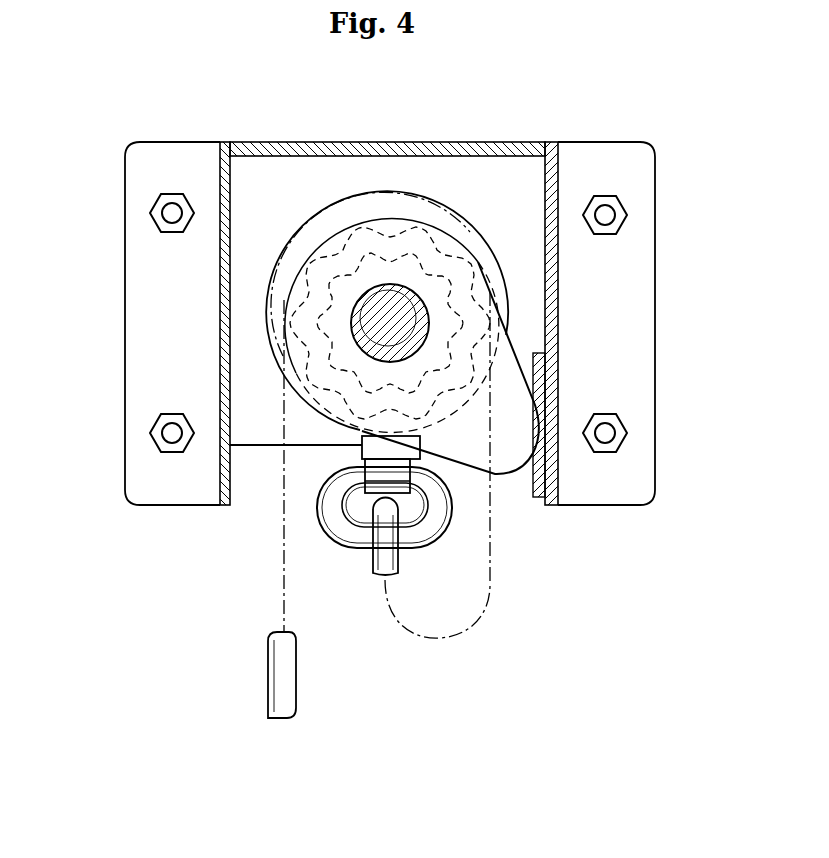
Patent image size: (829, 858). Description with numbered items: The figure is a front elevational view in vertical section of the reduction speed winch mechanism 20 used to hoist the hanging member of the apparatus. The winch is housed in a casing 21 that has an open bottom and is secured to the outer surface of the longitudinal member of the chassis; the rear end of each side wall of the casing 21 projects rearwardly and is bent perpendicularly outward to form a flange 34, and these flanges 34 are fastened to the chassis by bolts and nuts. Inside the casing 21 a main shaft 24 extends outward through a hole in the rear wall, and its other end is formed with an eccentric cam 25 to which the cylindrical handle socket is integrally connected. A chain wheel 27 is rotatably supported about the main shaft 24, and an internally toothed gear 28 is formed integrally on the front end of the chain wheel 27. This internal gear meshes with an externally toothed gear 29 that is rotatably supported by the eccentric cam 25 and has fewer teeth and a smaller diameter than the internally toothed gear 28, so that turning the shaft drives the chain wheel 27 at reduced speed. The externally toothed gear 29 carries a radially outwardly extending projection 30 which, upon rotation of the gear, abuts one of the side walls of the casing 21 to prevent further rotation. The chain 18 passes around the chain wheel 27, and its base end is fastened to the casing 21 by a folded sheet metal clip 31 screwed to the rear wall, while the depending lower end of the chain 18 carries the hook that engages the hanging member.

The chain 18 is at (300, 650).
The reduction speed winch mechanism 20 is at (551, 135).
The casing 21 is at (558, 194).
The main shaft 24 is at (345, 333).
The eccentric cam 25 is at (400, 323).
The chain wheel 27 is at (278, 262).
The internally toothed gear 28 is at (307, 303).
The externally toothed gear 29 is at (317, 328).
The projection 30 is at (503, 463).
The folded sheet metal clip 31 is at (370, 446).
The flange 34 is at (133, 207).